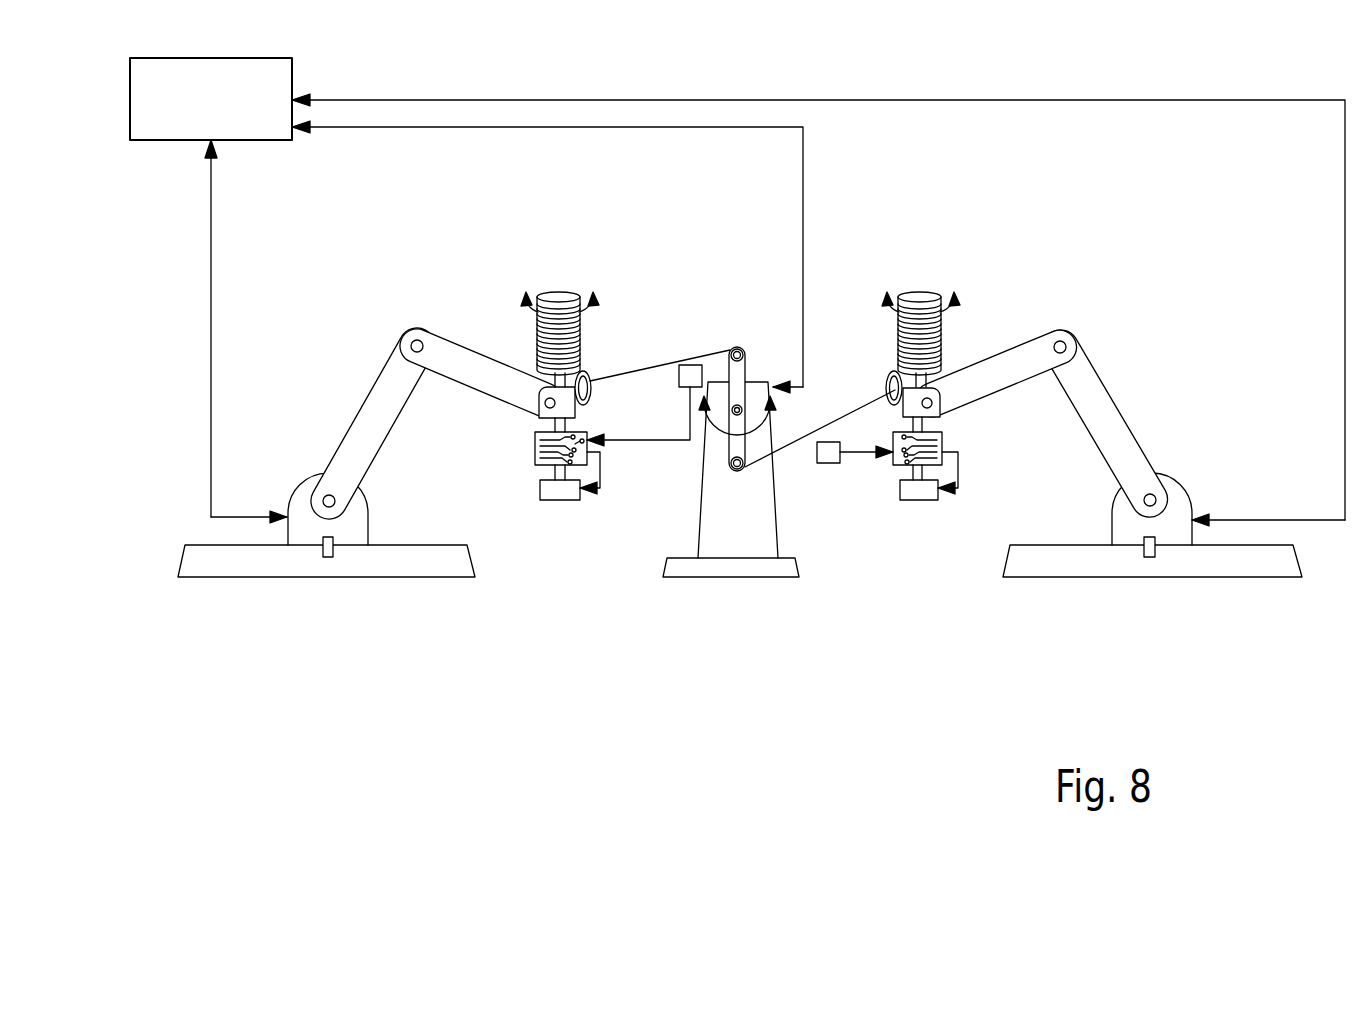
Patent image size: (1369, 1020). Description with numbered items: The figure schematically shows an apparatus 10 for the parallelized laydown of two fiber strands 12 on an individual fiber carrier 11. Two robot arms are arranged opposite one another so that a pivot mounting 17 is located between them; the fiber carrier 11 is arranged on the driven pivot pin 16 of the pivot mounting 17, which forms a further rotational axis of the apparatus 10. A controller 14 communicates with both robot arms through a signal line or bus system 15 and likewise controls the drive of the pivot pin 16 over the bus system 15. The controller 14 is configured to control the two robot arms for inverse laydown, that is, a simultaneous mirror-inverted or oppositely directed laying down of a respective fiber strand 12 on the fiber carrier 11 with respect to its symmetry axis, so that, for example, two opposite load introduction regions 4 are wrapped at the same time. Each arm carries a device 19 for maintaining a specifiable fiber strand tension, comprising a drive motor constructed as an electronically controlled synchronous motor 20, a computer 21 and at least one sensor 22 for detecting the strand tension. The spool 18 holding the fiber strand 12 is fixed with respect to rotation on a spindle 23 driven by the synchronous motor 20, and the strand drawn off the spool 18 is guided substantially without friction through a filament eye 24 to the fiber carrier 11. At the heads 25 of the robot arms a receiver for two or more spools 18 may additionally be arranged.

The load introduction region 4 is at (737, 348).
The apparatus 10 is at (282, 605).
The fiber carrier 11 is at (740, 378).
The fiber strand 12 is at (655, 365).
The controller 14 is at (152, 100).
The signal line or bus system 15 is at (211, 258).
The pivot pin 16 is at (748, 427).
The pivot mounting 17 is at (748, 527).
The spool 18 is at (560, 297).
The device for maintaining fiber strand tension 19 is at (505, 335).
The synchronous motor 20 is at (560, 498).
The computer 21 is at (536, 443).
The sensor 22 is at (688, 367).
The spindle 23 is at (565, 470).
The filament eye 24 is at (592, 390).
The head of the robot arm 25 is at (540, 412).